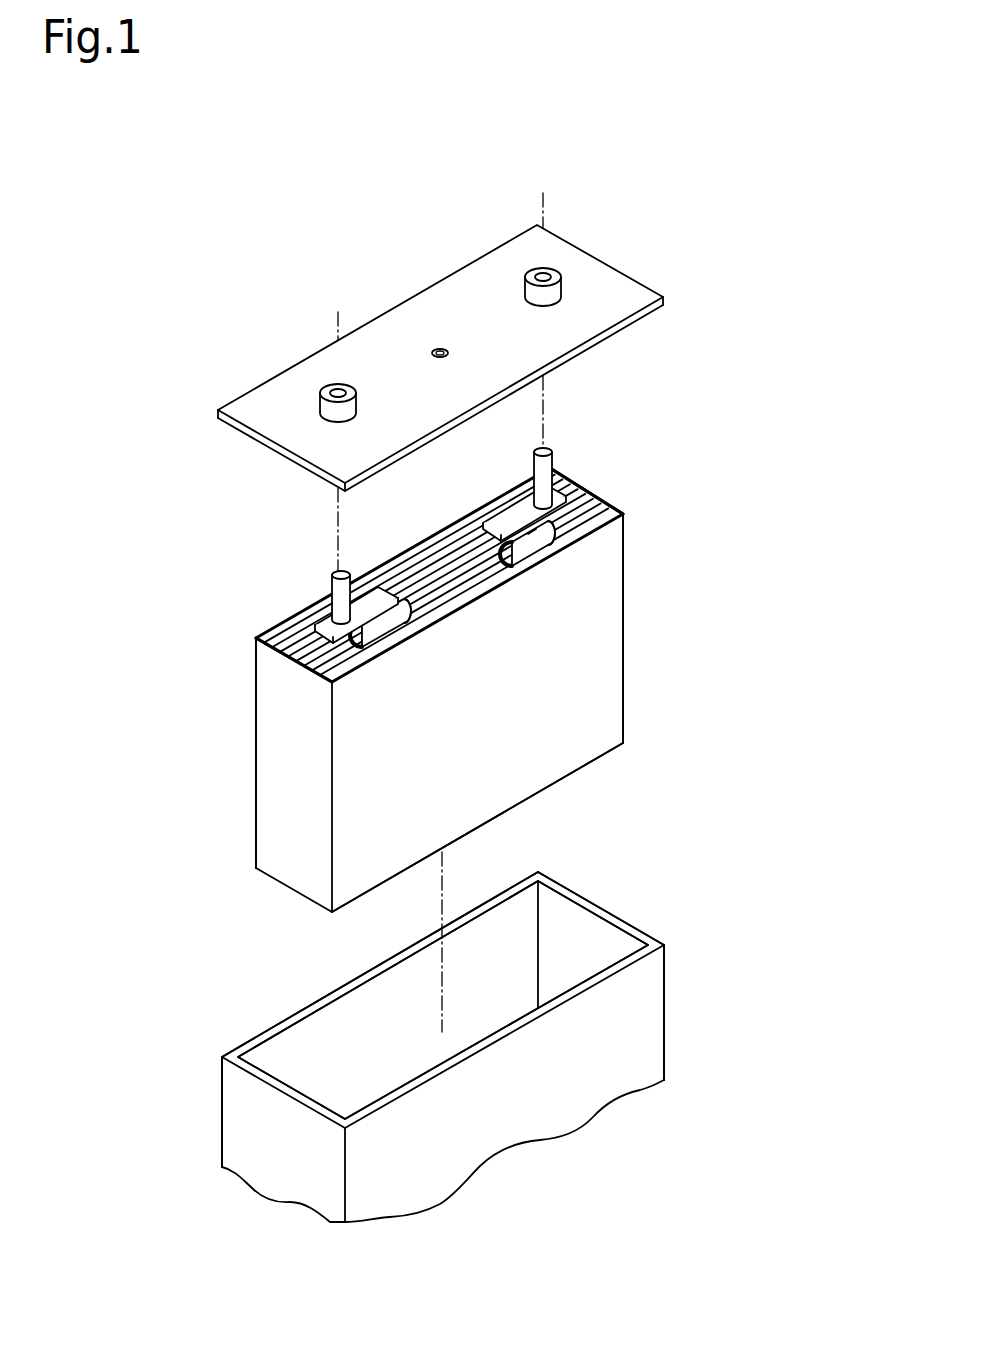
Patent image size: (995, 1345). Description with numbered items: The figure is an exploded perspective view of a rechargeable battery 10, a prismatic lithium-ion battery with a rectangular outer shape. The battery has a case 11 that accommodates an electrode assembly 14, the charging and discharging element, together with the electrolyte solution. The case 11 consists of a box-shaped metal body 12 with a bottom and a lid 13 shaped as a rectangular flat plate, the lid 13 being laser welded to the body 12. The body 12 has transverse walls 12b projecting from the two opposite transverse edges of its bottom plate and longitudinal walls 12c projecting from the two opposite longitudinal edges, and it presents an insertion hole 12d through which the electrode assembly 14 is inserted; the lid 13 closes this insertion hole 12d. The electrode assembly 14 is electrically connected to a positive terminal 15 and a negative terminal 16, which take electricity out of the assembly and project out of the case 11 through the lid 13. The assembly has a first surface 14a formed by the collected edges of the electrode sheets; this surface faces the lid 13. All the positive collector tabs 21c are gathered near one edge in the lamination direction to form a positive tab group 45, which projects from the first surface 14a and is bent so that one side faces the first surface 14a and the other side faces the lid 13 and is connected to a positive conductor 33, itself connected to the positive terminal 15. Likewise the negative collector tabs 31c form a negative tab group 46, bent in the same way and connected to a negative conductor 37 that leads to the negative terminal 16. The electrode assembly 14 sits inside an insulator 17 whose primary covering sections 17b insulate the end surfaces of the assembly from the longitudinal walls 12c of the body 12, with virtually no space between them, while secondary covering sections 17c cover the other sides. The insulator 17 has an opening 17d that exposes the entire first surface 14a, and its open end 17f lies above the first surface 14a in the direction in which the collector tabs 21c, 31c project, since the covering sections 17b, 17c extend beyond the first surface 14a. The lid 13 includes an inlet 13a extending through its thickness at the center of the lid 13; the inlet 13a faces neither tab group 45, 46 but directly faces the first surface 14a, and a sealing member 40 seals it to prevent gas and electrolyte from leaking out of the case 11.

The rechargeable battery 10 is at (664, 256).
The case 11 is at (735, 280).
The body 12 is at (665, 945).
The transverse walls 12b is at (613, 918).
The longitudinal walls 12c is at (281, 1023).
The insertion hole 12d is at (618, 953).
The lid 13 is at (663, 298).
The inlet 13a is at (448, 353).
The electrode assembly 14 is at (599, 485).
The first surface 14a is at (317, 675).
The positive terminal 15 is at (333, 581).
The negative terminal 16 is at (550, 464).
The insulator 17 is at (265, 776).
The primary covering sections 17b is at (603, 707).
The secondary covering sections 17c is at (270, 843).
The opening 17d is at (600, 506).
The open end 17f is at (620, 514).
The positive collector tabs 21c is at (400, 624).
The negative collector tabs 31c is at (550, 553).
The positive conductor 33 is at (373, 597).
The negative conductor 37 is at (503, 522).
The sealing member 40 is at (438, 352).
The positive tab group 45 is at (392, 640).
The negative tab group 46 is at (536, 570).